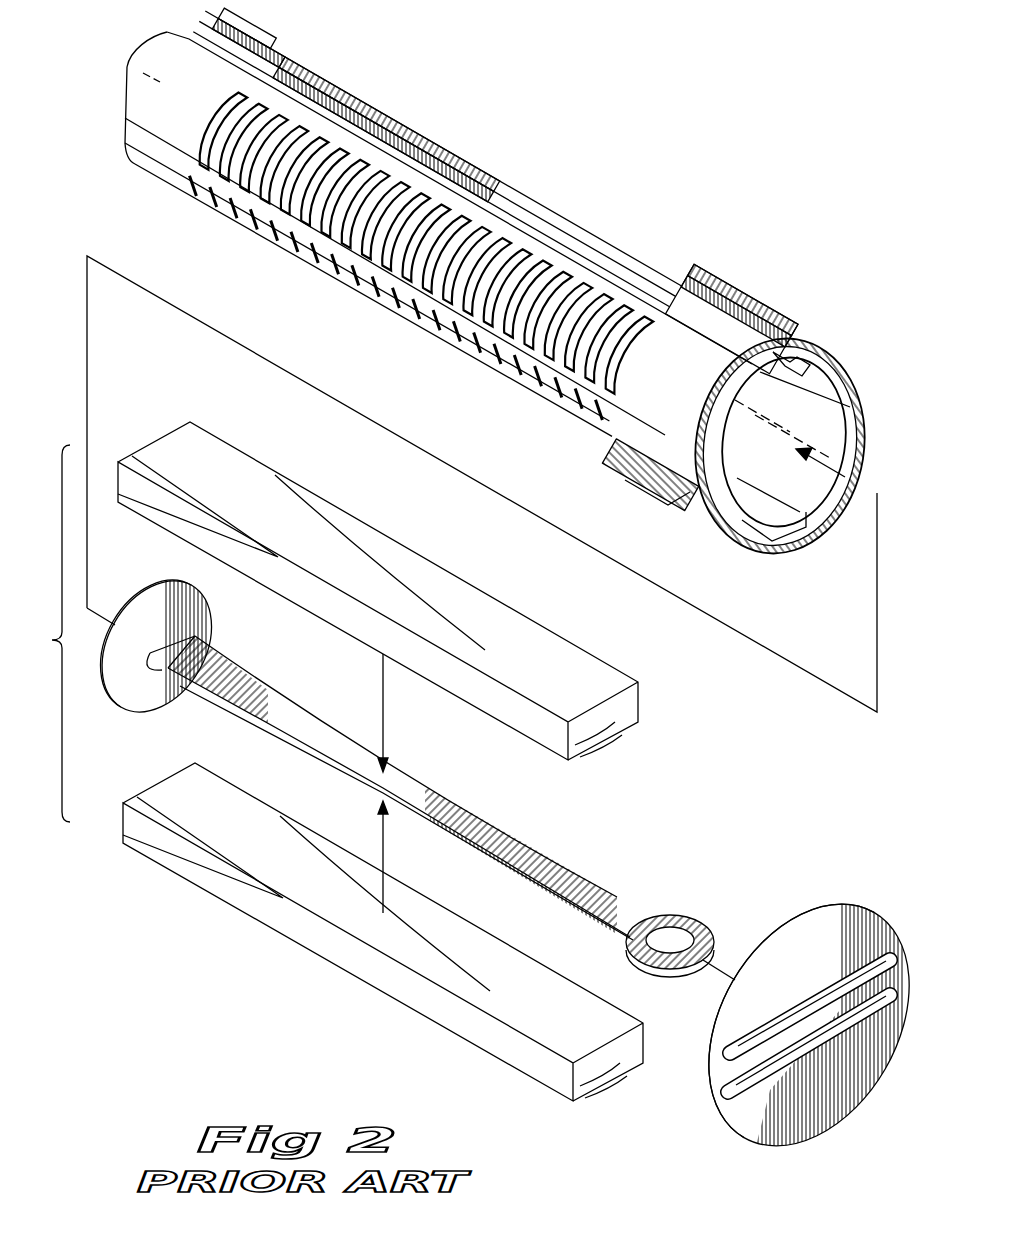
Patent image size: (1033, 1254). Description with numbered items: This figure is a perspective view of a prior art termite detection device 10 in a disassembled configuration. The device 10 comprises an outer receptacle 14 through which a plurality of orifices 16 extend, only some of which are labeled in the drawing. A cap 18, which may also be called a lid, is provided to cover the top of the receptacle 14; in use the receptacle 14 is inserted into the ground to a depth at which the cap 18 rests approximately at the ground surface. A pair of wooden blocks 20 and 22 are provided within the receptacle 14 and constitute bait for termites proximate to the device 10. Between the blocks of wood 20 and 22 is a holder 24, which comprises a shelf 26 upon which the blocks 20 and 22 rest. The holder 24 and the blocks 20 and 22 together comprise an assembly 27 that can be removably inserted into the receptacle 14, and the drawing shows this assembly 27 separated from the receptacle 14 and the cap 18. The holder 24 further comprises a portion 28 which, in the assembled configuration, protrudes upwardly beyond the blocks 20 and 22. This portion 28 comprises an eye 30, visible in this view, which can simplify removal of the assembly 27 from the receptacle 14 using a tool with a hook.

The termite detection device 10 is at (506, 287).
The outer receptacle 14 is at (838, 353).
The orifices 16 is at (332, 278).
The cap 18 is at (809, 1021).
The wooden block 20 is at (400, 572).
The wooden block 22 is at (293, 923).
The holder 24 is at (483, 835).
The shelf 26 is at (104, 688).
The assembly 27 is at (41, 633).
The portion 28 is at (731, 935).
The eye 30 is at (664, 936).